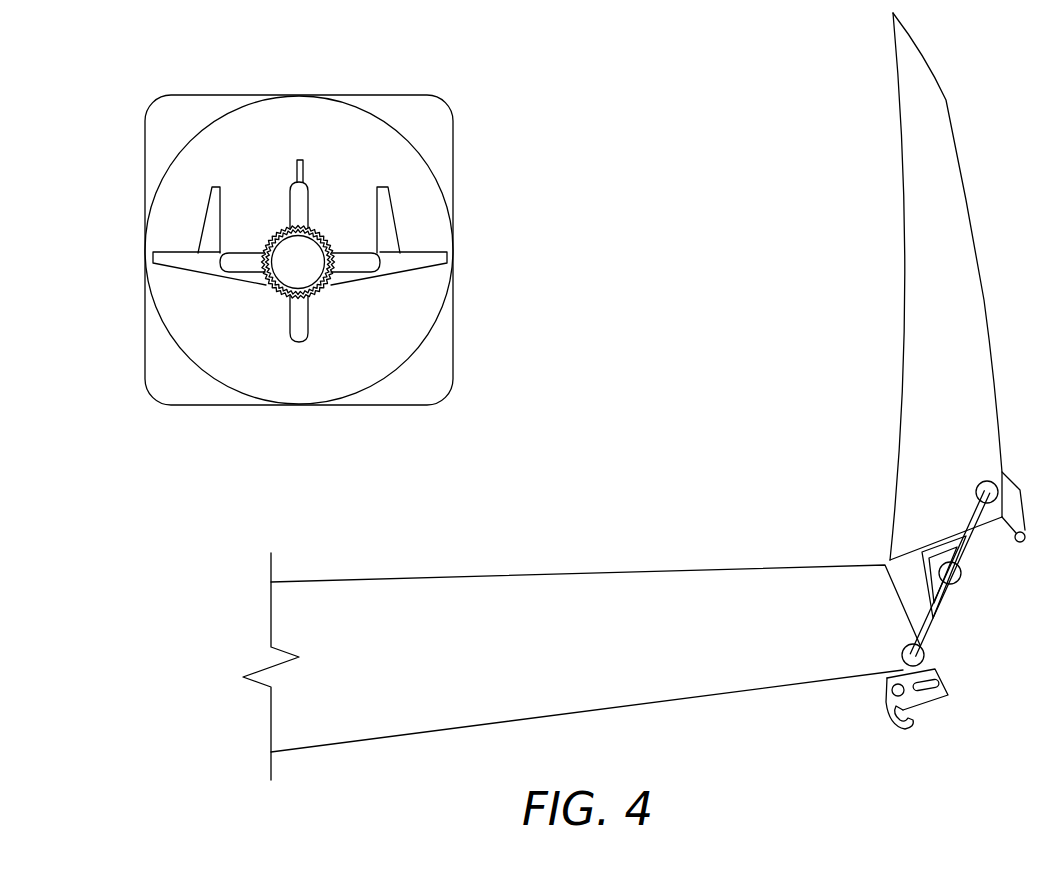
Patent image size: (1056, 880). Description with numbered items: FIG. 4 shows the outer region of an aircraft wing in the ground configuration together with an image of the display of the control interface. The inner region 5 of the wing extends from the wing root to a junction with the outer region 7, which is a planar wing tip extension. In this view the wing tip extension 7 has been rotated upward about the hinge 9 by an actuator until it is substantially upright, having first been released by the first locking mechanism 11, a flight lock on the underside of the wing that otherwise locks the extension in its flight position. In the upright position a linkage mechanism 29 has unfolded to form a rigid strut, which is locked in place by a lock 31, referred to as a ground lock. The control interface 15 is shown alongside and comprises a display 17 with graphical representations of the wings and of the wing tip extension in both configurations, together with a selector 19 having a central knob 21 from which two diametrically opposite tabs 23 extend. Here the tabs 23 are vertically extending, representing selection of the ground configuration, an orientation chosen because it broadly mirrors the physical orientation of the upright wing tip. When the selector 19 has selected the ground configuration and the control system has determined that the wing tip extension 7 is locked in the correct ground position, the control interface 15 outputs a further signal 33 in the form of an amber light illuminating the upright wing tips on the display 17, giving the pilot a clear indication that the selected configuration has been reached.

The inner region 5 is at (541, 580).
The outer region 7 is at (912, 332).
The hinge 9 is at (876, 553).
The first locking mechanism 11 is at (942, 716).
The control interface 15 is at (498, 143).
The display 17 is at (312, 389).
The selector 19 is at (282, 232).
The central knob 21 is at (316, 280).
The tabs 23 is at (305, 190).
The linkage mechanism 29 is at (960, 578).
The lock 31 is at (920, 542).
The further signal 33 is at (216, 187).